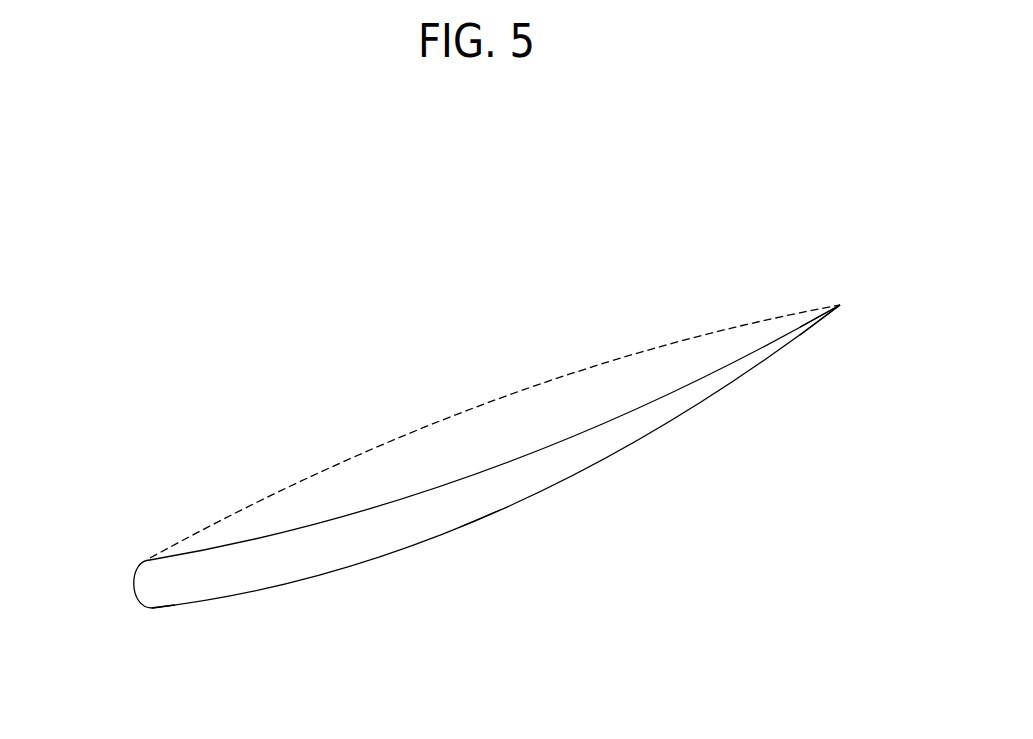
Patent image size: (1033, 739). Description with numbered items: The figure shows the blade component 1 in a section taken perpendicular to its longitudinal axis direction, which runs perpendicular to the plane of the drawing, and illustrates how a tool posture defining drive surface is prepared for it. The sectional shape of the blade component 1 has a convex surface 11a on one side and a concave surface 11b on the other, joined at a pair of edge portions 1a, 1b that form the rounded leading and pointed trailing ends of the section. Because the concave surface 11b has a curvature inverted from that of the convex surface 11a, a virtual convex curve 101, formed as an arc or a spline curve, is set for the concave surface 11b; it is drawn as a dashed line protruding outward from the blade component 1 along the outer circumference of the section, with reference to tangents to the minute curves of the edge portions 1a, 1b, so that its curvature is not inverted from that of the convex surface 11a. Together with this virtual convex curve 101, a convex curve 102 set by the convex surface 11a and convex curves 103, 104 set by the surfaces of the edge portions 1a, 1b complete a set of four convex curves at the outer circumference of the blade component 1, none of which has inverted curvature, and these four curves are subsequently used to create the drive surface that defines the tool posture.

The blade component 1 is at (196, 395).
The edge portion 1a is at (131, 593).
The edge portion 1b is at (842, 305).
The convex surface 11a is at (565, 480).
The concave surface 11b is at (380, 503).
The virtual convex curve 101 is at (487, 403).
The convex curve 102 is at (480, 520).
The convex curve 103 is at (145, 607).
The convex curve 104 is at (840, 305).